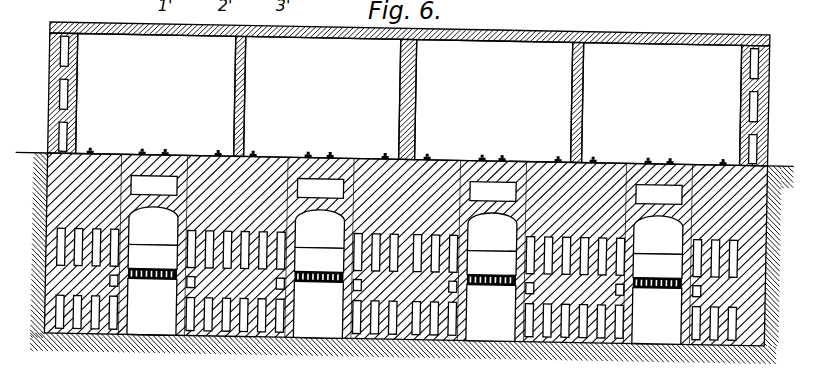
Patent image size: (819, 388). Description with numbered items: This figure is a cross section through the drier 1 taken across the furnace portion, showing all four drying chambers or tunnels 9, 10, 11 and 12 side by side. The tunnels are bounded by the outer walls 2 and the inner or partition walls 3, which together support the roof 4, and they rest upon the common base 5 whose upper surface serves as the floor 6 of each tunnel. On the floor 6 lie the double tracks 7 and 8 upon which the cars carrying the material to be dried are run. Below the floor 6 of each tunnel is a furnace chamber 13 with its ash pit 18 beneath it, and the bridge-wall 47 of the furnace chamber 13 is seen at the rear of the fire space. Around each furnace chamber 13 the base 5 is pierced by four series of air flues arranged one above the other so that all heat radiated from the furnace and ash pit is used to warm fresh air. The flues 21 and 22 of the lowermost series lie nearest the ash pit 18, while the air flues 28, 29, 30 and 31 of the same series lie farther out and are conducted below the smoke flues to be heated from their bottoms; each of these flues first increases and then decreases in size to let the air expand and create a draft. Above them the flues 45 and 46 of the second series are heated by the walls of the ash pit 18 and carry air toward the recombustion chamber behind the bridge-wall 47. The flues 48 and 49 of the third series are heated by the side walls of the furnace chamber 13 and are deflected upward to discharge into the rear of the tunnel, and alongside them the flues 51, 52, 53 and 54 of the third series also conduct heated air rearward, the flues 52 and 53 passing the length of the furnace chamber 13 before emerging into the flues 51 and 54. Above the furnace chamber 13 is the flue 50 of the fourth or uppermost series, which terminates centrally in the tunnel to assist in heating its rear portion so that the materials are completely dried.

The drier 1 is at (50, 97).
The outer walls 2 is at (79, 94).
The inner or partition walls 3 is at (246, 93).
The roof 4 is at (487, 34).
The base 5 is at (272, 182).
The floor 6 is at (353, 158).
The track 7 is at (144, 149).
The track 8 is at (168, 149).
The drying chamber or tunnel 9 is at (156, 95).
The drying chamber or tunnel 10 is at (322, 98).
The drying chamber or tunnel 11 is at (494, 101).
The drying chamber or tunnel 12 is at (662, 104).
The furnace chamber 13 is at (154, 225).
The ash pit 18 is at (157, 318).
The air flue 21 is at (116, 329).
The air flue 22 is at (193, 329).
The air flue 28 is at (79, 329).
The air flue 29 is at (102, 329).
The air flue 30 is at (213, 329).
The air flue 31 is at (229, 329).
The air flue of second series 45 is at (286, 284).
The air flue of second series 46 is at (190, 288).
The bridge-wall 47 is at (311, 251).
The air flue of third series 48 is at (460, 236).
The air flue of third series 49 is at (534, 254).
The air flue of fourth series 50 is at (313, 180).
The air flue of third series 51 is at (582, 264).
The air flue of third series 52 is at (610, 232).
The air flue of third series 53 is at (716, 250).
The air flue of third series 54 is at (740, 260).